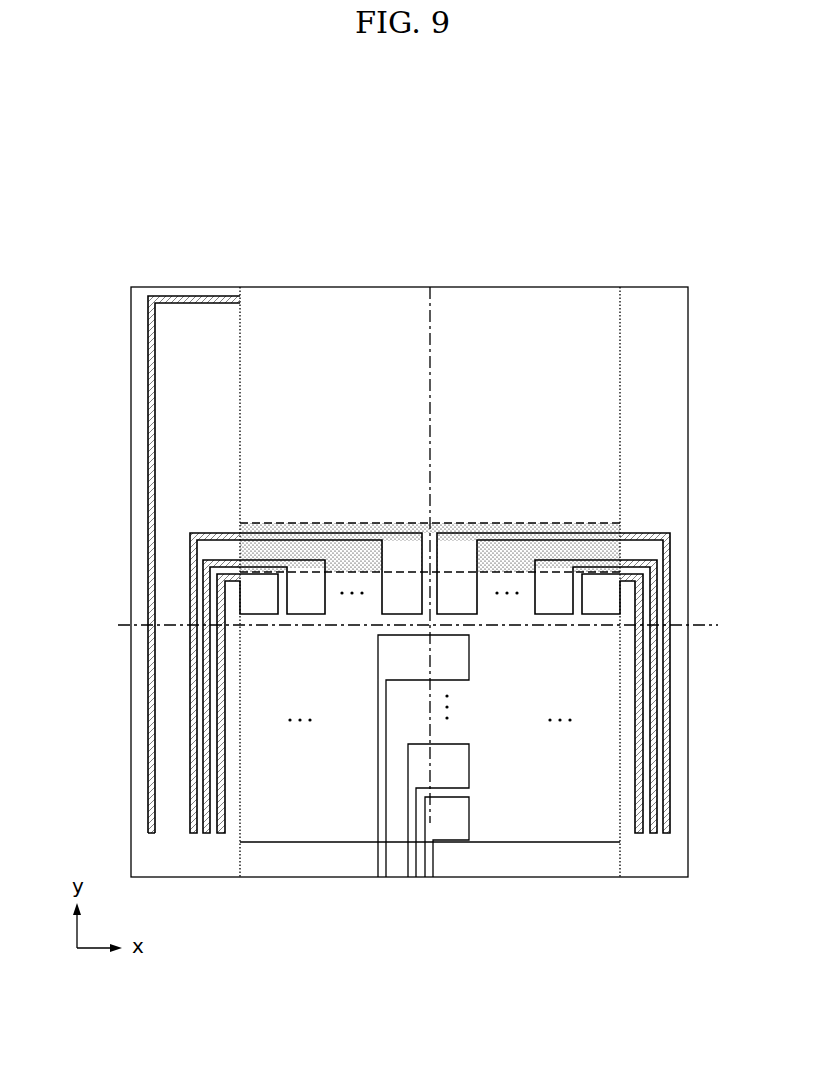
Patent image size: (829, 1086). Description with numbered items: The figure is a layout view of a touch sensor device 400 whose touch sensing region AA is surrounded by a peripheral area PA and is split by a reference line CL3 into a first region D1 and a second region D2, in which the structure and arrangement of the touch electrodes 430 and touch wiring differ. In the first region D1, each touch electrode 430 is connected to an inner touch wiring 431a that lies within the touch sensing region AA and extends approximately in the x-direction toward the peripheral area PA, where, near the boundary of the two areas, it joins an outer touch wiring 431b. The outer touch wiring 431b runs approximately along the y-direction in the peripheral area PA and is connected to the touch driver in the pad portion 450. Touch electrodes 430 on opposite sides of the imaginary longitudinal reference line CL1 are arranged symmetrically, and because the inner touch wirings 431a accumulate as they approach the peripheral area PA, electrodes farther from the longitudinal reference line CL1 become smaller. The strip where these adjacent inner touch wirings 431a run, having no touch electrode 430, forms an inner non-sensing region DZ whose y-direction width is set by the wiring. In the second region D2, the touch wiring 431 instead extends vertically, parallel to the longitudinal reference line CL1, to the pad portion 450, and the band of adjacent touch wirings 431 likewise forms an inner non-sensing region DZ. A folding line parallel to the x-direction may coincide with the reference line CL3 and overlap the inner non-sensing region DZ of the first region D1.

The touch sensor device 400 is at (388, 528).
The touch electrode 430 is at (310, 615).
The touch wiring 431 is at (346, 612).
The inner touch wiring 431a is at (295, 533).
The outer touch wiring 431b is at (361, 696).
The pad portion 450 is at (260, 877).
The peripheral area PA is at (141, 305).
The touch sensing region AA is at (541, 305).
The inner non-sensing region DZ is at (516, 523).
The longitudinal reference line CL1 is at (430, 287).
The reference line CL3 is at (737, 625).
The first region D1 is at (689, 287).
The second region D2 is at (689, 625).